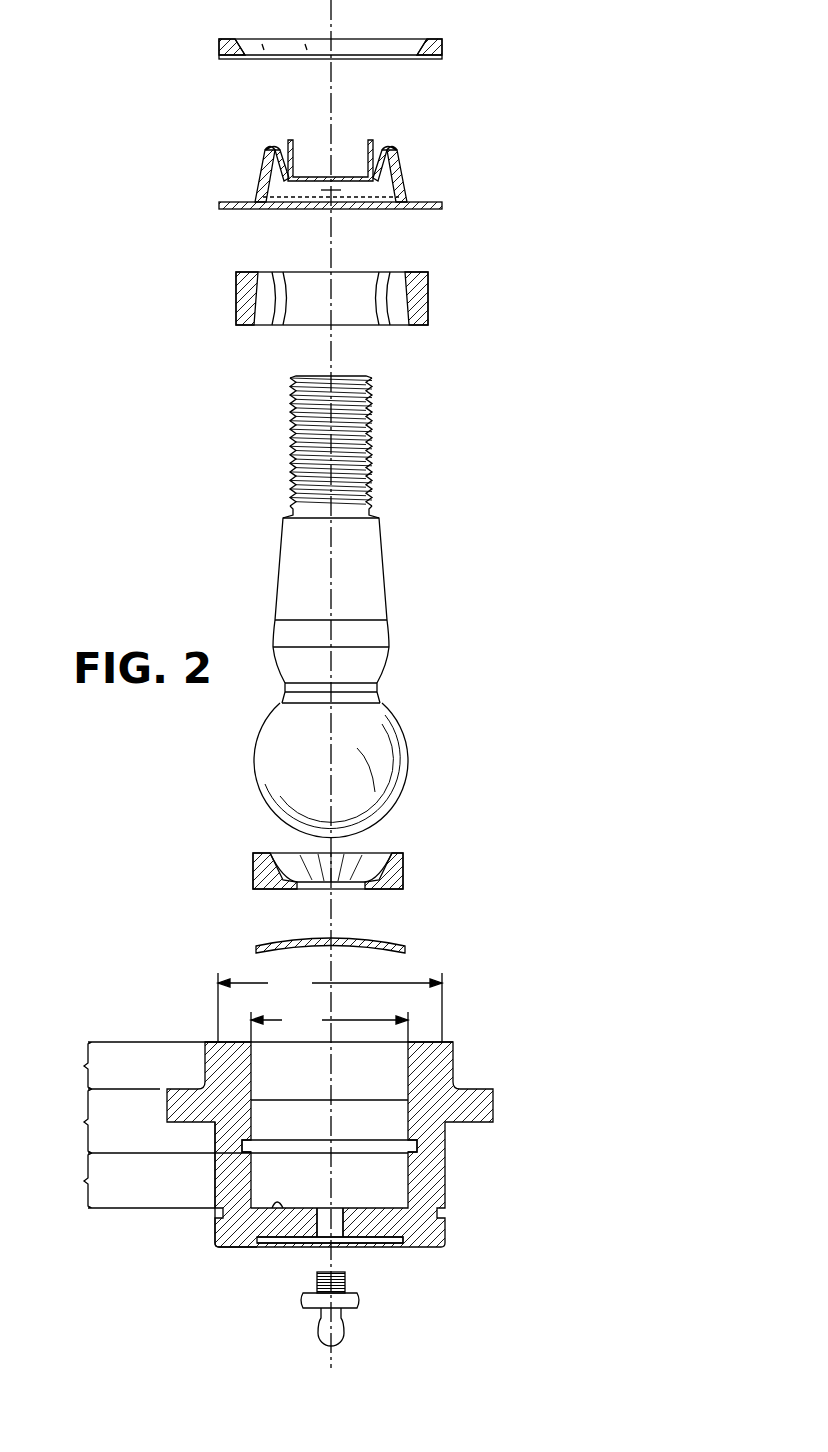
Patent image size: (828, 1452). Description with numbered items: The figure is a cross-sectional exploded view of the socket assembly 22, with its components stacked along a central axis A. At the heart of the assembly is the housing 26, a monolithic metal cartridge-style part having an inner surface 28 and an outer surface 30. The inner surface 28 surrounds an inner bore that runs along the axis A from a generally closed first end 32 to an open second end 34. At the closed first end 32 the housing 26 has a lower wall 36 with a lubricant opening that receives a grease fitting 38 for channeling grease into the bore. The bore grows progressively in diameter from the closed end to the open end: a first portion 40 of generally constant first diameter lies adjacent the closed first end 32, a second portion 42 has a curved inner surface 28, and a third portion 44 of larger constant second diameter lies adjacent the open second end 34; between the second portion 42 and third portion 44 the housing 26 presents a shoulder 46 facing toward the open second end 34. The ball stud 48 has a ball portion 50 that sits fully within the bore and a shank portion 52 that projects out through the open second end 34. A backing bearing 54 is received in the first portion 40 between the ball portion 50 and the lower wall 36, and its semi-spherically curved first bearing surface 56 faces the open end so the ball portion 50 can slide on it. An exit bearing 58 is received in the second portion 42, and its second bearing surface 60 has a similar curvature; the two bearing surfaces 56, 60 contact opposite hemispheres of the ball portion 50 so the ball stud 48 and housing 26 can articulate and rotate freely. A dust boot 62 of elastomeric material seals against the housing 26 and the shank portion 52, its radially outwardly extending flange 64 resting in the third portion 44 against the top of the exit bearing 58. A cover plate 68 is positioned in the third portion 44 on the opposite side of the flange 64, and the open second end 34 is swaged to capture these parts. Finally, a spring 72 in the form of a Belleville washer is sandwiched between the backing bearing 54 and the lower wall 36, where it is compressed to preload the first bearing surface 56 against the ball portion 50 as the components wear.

The central axis A is at (331, 12).
The socket assembly 22 is at (606, 604).
The housing 26 is at (309, 1139).
The inner surface 28 is at (218, 1195).
The outer surface 30 is at (207, 1160).
The closed first end 32 is at (285, 1197).
The open second end 34 is at (420, 1042).
The lower wall 36 is at (385, 1226).
The grease fitting 38 is at (343, 1331).
The first portion 40 is at (133, 1180).
The second portion 42 is at (230, 1121).
The third portion 44 is at (136, 1065).
The shoulder 46 is at (242, 1148).
The ball stud 48 is at (342, 607).
The ball portion 50 is at (357, 758).
The shank portion 52 is at (297, 558).
The backing bearing 54 is at (360, 832).
The first bearing surface 56 is at (273, 866).
The exit bearing 58 is at (383, 340).
The second bearing surface 60 is at (263, 316).
The dust boot 62 is at (368, 196).
The flange 64 is at (435, 210).
The cover plate 68 is at (442, 46).
The spring 72 is at (385, 938).